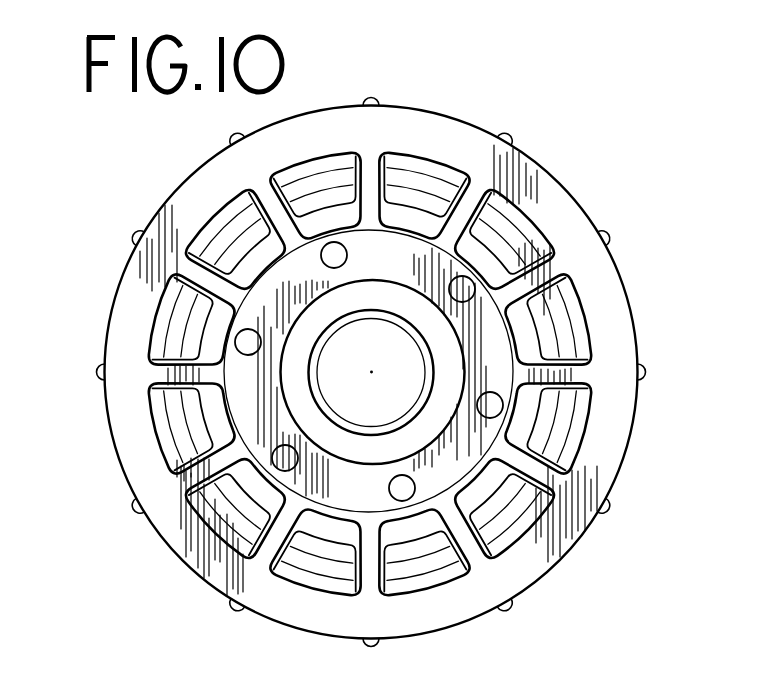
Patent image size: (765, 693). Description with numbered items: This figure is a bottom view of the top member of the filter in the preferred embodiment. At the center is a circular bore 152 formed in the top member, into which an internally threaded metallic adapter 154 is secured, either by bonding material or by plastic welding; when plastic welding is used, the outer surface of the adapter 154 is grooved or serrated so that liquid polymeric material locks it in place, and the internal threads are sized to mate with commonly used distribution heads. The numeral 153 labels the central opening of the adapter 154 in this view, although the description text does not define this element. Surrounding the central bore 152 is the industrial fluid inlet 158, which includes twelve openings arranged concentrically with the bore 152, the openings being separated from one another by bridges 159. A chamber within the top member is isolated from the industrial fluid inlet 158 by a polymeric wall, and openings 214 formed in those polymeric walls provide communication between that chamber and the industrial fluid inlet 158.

The circular bore 152 is at (455, 338).
The central bore 153 is at (374, 348).
The internally threaded metallic adapter 154 is at (448, 367).
The industrial fluid inlet 158 is at (198, 415).
The bridges 159 is at (513, 458).
The openings 214 is at (243, 340).